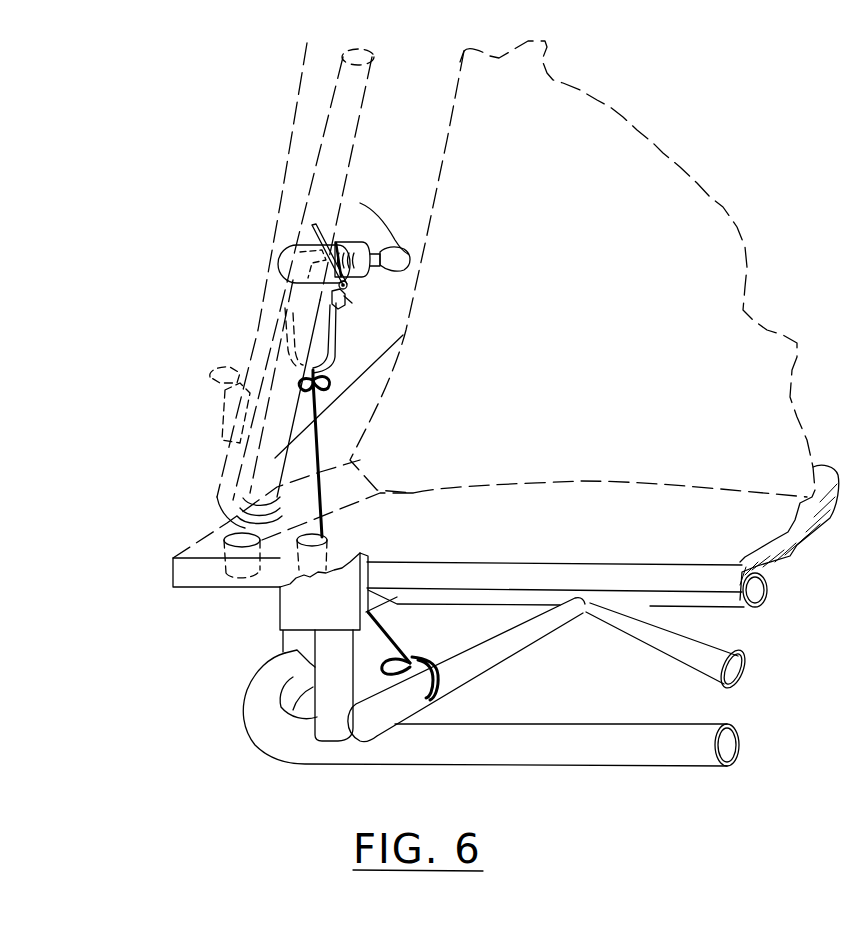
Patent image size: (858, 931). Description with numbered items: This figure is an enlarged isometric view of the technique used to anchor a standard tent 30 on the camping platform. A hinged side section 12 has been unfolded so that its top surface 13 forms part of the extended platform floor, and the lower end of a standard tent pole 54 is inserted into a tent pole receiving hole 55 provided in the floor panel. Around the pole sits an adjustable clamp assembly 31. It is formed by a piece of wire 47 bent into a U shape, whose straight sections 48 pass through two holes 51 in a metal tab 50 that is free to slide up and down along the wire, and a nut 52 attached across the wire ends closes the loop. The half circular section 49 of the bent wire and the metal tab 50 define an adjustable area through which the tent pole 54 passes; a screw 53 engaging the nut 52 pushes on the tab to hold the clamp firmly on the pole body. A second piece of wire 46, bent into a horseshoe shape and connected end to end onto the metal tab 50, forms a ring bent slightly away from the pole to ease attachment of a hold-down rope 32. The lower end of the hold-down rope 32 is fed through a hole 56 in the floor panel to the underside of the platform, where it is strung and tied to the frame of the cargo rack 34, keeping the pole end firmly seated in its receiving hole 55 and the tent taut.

The side section 12 is at (157, 563).
The top surface 13 is at (205, 537).
The tent 30 is at (644, 187).
The adjustable clamp assembly 31 is at (382, 218).
The hold-down rope 32 is at (300, 550).
The rack 34 is at (264, 738).
The second piece of wire 46 is at (331, 344).
The piece of wire 47 is at (293, 264).
The straight sections 48 is at (360, 281).
The half circular section 49 is at (339, 285).
The metal tab 50 is at (340, 298).
The holes 51 is at (352, 303).
The nut 52 is at (357, 247).
The screw 53 is at (360, 203).
The tent pole 54 is at (326, 165).
The tent pole receiving hole 55 is at (228, 531).
The hole 56 is at (305, 510).